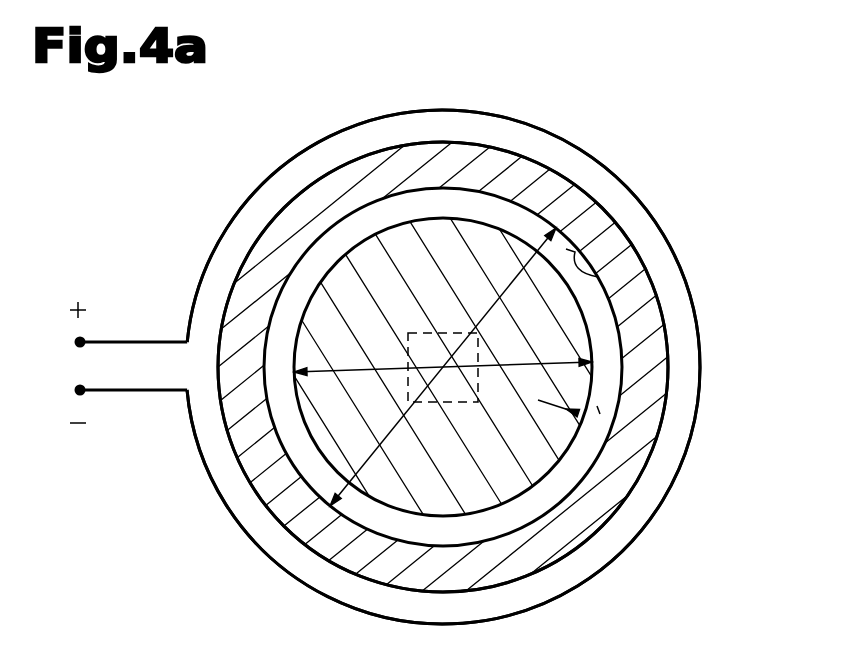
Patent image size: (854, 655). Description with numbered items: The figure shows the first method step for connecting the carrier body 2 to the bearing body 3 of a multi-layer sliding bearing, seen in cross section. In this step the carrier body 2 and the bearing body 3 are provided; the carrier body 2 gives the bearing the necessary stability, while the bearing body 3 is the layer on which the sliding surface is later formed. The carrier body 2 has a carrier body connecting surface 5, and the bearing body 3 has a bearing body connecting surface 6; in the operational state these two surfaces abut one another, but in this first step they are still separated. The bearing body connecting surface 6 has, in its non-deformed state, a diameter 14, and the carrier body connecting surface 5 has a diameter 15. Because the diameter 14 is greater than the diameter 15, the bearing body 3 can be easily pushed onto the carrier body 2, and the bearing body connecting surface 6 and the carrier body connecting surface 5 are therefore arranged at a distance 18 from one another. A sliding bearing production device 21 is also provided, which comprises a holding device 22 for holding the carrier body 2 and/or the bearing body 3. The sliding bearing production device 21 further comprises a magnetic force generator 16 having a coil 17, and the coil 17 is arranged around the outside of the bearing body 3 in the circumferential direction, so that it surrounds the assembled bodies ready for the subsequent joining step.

The sliding bearing production device 21 is at (722, 87).
The magnetic force generator 16 is at (715, 500).
The coil 17 is at (223, 238).
The bearing body 3 is at (520, 180).
The bearing body connecting surface 6 is at (598, 277).
The carrier body connecting surface 5 is at (583, 309).
The carrier body 2 is at (367, 267).
The holding device 22 is at (424, 338).
The diameter of the bearing body connecting surface 14 is at (386, 436).
The diameter of the carrier body connecting surface 15 is at (495, 368).
The distance 18 is at (578, 413).